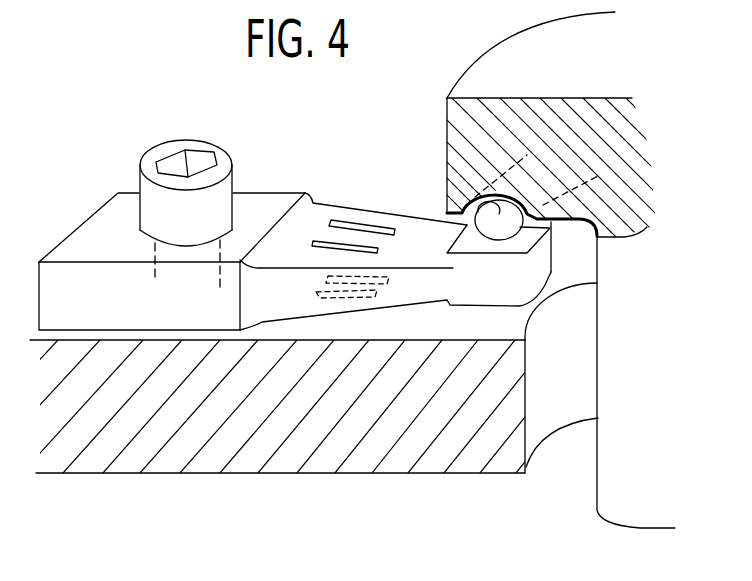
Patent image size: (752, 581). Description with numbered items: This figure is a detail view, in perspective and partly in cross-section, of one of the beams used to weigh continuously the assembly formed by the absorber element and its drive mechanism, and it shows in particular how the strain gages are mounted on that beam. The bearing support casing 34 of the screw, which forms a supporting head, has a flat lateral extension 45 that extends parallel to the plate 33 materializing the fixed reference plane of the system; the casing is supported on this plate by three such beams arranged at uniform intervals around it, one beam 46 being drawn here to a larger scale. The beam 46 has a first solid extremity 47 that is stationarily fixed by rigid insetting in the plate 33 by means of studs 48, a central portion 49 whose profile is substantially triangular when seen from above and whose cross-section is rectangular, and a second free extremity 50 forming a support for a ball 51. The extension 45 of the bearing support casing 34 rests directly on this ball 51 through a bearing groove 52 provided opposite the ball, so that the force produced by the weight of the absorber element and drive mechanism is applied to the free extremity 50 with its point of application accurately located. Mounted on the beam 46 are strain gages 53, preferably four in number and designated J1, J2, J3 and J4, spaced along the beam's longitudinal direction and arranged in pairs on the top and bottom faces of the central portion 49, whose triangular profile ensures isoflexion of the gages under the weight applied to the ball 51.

The plate 33 is at (470, 460).
The bearing support casing 34 is at (462, 78).
The flat lateral extension 45 is at (447, 147).
The beam 46 is at (280, 190).
The first solid extremity 47 is at (84, 220).
The studs 48 is at (167, 160).
The central portion 49 is at (388, 293).
The second free extremity 50 is at (525, 285).
The ball 51 is at (551, 232).
The bearing groove 52 is at (498, 200).
The strain gages 53 is at (358, 225).
The strain gage J1 is at (383, 225).
The strain gage J2 is at (326, 250).
The strain gage J3 is at (393, 282).
The strain gage J4 is at (320, 298).